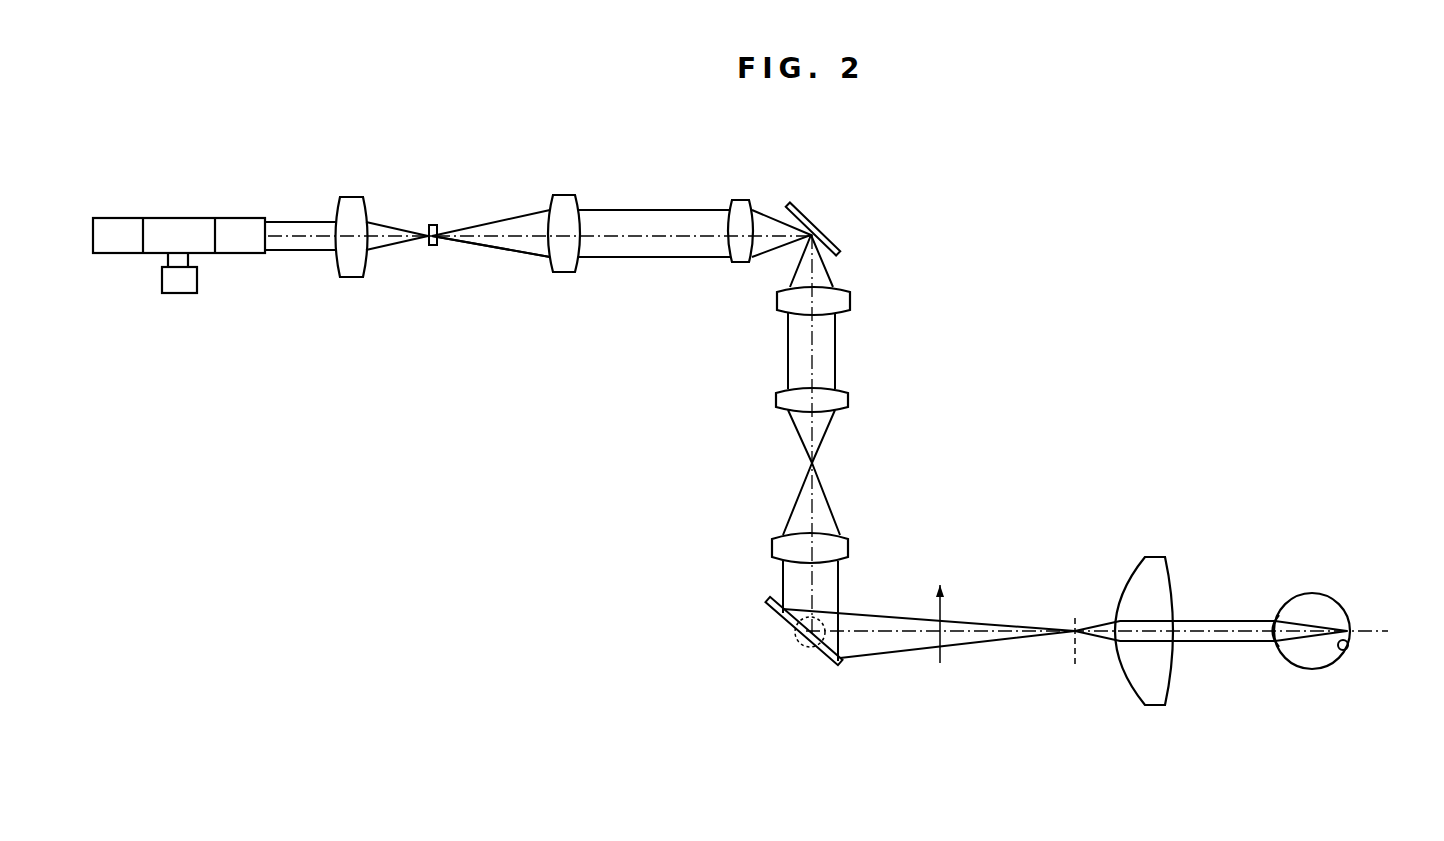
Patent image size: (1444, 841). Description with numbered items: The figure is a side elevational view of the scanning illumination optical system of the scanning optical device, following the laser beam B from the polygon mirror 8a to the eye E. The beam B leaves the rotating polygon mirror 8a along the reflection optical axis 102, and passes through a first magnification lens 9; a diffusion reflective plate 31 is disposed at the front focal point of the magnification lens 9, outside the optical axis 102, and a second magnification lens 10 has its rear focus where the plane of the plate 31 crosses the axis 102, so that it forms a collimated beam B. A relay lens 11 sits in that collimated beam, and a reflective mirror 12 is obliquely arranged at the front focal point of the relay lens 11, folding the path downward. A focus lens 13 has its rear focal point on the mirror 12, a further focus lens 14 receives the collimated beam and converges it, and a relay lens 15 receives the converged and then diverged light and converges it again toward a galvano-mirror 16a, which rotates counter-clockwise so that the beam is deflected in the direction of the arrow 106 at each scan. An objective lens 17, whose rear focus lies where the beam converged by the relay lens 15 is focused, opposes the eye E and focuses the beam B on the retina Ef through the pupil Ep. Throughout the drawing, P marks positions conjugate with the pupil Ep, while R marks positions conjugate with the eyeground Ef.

The polygon mirror 8a is at (124, 218).
The magnification lens 9 is at (352, 277).
The diffusion reflective plate 31 is at (435, 222).
The reflection optical axis 102 is at (508, 247).
The magnification lens 10 is at (562, 274).
The relay lens 11 is at (742, 263).
The reflective mirror 12 is at (835, 238).
The focus lens 13 is at (851, 298).
The focus lens 14 is at (849, 400).
The relay lens 15 is at (849, 546).
The mirror 16a is at (832, 664).
The arrow 106 is at (940, 665).
The objective lens 17 is at (1156, 707).
The eye E is at (1320, 668).
The pupil Ep is at (1280, 615).
The retina Ef is at (1350, 648).
The laser beam B is at (304, 221).
The pupil-conjugate position P is at (262, 272).
The retina-conjugate position R is at (427, 268).